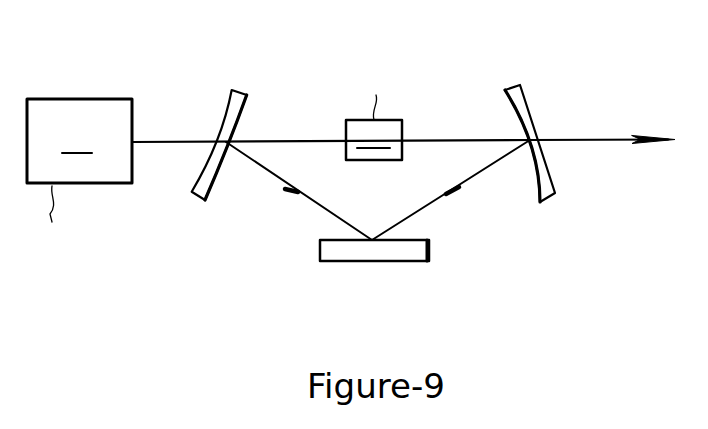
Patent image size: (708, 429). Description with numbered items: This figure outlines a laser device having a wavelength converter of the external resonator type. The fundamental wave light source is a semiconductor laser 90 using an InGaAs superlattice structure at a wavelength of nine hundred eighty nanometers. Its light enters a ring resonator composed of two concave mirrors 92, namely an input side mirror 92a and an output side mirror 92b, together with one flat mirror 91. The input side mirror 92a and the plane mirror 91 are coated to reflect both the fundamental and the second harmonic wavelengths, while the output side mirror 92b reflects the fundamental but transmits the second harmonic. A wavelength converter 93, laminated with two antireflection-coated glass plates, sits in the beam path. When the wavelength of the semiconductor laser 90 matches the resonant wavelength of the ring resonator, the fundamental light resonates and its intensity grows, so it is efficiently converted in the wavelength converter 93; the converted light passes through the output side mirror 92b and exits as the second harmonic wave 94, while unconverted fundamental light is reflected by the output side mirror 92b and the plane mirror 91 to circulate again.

The semiconductor laser 90 is at (82, 171).
The flat mirror 91 is at (377, 262).
The concave mirrors 92 is at (247, 93).
The input side mirror 92a is at (229, 96).
The output side mirror 92b is at (542, 203).
The wavelength converter 93 is at (366, 114).
The second harmonic wave 94 is at (626, 140).